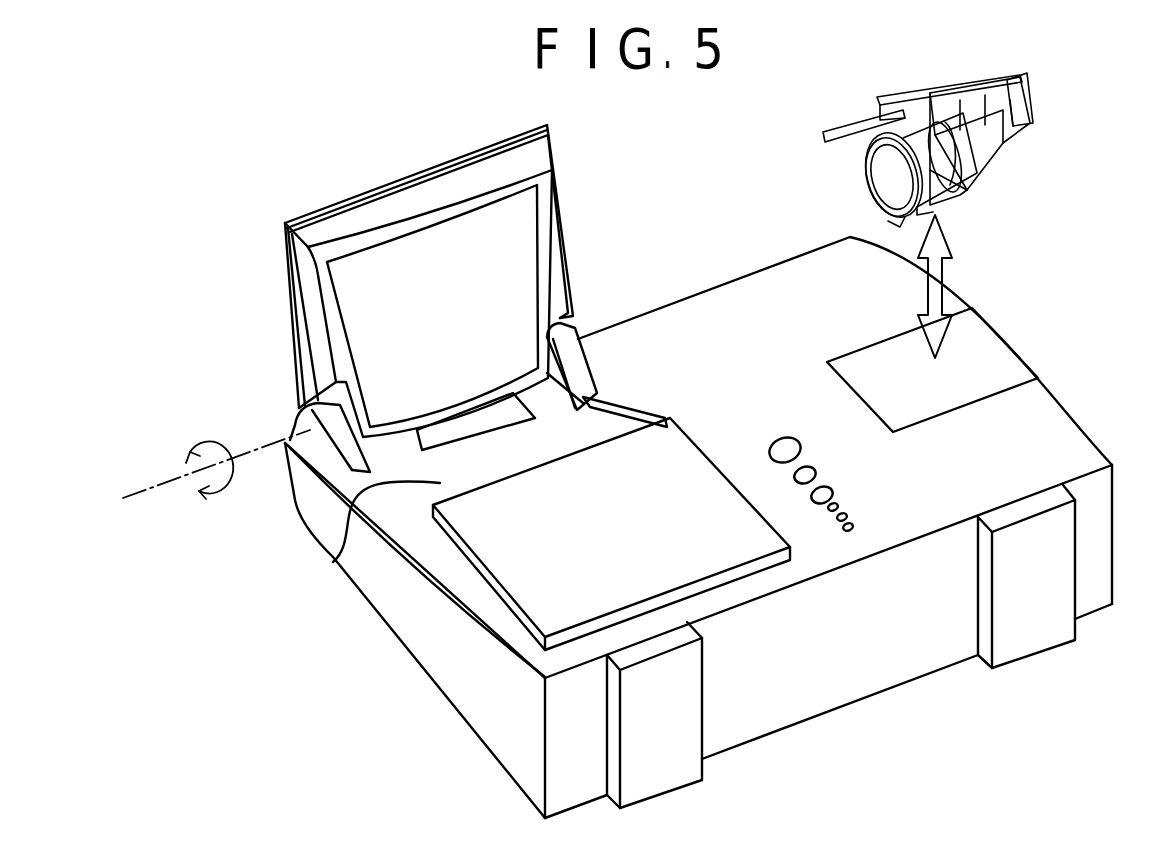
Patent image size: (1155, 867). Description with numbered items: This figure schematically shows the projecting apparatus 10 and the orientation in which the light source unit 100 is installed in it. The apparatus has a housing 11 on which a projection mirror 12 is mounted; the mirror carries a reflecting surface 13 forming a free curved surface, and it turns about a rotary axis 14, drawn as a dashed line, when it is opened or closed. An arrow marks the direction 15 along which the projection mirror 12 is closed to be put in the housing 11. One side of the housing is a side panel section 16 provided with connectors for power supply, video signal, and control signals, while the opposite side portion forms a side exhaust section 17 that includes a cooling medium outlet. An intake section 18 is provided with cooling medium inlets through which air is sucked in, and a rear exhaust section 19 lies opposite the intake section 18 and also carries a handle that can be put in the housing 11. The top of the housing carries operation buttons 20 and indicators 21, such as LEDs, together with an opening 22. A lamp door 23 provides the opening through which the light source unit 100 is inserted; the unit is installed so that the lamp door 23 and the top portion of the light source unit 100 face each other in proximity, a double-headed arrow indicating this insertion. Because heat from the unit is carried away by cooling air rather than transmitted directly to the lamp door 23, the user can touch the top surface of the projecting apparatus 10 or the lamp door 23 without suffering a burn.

The projecting apparatus 10 is at (708, 157).
The housing 11 is at (1050, 410).
The projection mirror 12 is at (340, 201).
The reflecting surface 13 is at (376, 312).
The rotary axis 14 is at (147, 489).
The direction 15 is at (546, 406).
The side panel section 16 is at (478, 688).
The side exhaust section 17 is at (1012, 289).
The intake section 18 is at (817, 680).
The rear exhaust section 19 is at (668, 258).
The operation buttons 20 is at (797, 430).
The indicators 21 is at (840, 497).
The opening 22 is at (333, 562).
The lamp door 23 is at (1006, 367).
The light source unit 100 is at (1030, 78).